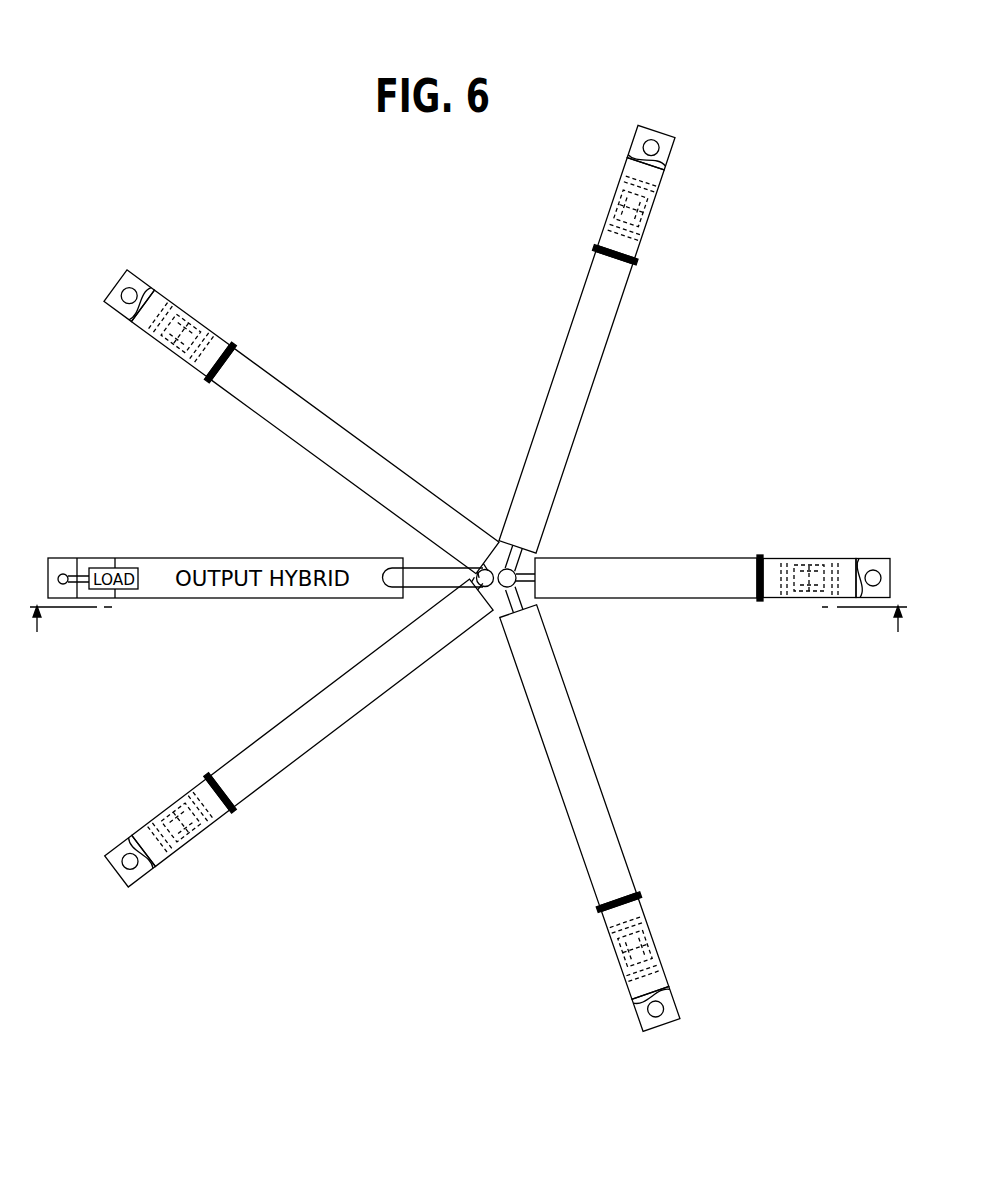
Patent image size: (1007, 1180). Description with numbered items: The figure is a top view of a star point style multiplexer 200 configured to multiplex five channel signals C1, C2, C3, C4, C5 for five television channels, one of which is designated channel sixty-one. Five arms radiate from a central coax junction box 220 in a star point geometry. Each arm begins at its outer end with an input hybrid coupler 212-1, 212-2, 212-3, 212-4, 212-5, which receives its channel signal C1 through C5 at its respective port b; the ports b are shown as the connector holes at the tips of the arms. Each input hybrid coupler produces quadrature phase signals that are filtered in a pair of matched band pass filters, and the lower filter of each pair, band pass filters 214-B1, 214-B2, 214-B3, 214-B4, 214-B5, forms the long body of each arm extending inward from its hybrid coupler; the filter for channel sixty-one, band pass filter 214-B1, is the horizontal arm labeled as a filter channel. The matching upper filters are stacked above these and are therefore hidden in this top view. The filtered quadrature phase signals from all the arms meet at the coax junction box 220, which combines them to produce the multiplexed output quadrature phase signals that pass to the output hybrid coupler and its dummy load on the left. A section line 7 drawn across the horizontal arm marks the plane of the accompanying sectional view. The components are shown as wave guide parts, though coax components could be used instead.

The star point style multiplexer 200 is at (789, 325).
The coax junction box 220 is at (524, 588).
The band pass filter 214-B1 is at (580, 557).
The band pass filter 214-B2 is at (585, 742).
The band pass filter 214-B3 is at (390, 691).
The band pass filter 214-B4 is at (588, 406).
The band pass filter 214-B5 is at (296, 392).
The input hybrid coupler 212-1 is at (802, 558).
The input hybrid coupler 212-2 is at (652, 933).
The input hybrid coupler 212-3 is at (212, 831).
The input hybrid coupler 212-4 is at (645, 233).
The input hybrid coupler 212-5 is at (203, 325).
The channel signal C1 is at (861, 564).
The channel signal C2 is at (671, 1006).
The channel signal C3 is at (148, 869).
The channel signal C4 is at (666, 160).
The channel signal C5 is at (147, 294).
The port b is at (644, 150).
The section line 7 is at (469, 639).